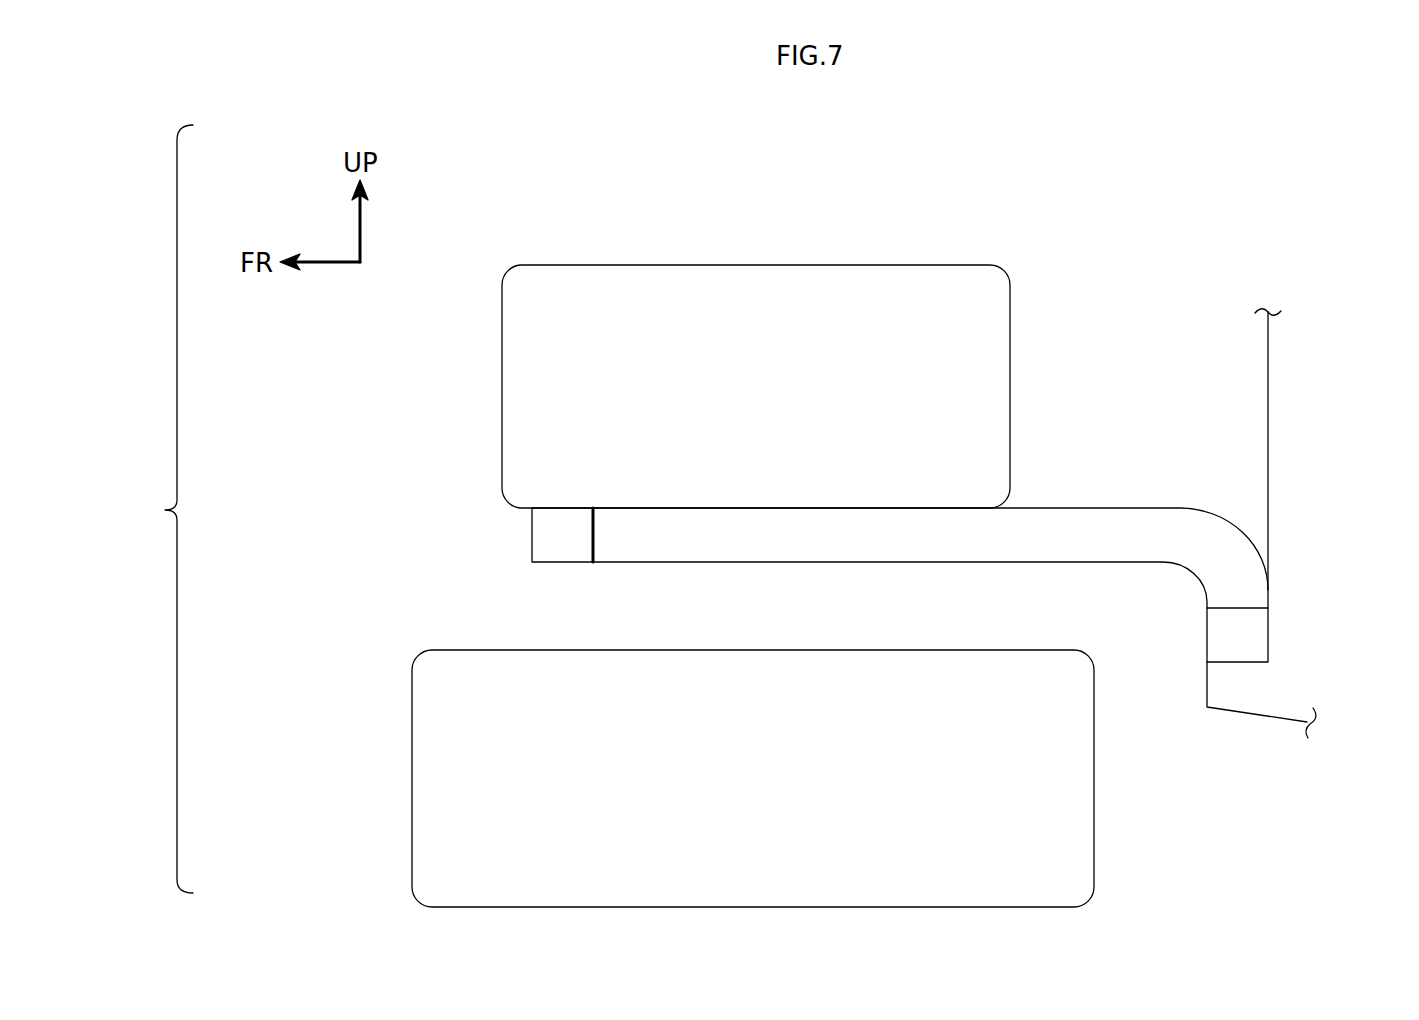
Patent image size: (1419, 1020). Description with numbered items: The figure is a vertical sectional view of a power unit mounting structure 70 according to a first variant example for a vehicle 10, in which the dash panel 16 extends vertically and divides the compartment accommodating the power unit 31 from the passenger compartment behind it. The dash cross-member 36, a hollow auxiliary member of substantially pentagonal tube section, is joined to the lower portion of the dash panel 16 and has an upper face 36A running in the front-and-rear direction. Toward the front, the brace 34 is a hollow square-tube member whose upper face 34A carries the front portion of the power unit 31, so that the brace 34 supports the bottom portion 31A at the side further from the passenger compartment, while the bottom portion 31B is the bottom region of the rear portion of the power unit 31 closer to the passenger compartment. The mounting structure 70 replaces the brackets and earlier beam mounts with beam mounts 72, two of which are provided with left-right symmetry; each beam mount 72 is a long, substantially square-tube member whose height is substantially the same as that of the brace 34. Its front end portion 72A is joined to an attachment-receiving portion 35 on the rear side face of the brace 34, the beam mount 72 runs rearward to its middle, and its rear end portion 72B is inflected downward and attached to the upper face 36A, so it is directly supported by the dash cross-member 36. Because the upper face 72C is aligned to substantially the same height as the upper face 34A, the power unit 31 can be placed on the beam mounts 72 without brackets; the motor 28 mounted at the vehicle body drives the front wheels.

The vehicle 10 is at (1193, 230).
The dash panel 16 is at (1265, 398).
The motor 28 is at (797, 650).
The power unit 31 is at (866, 264).
The bottom portion 31A is at (552, 514).
The bottom portion 31B is at (930, 512).
The brace 34 is at (531, 538).
The upper face 34A is at (577, 512).
The attachment-receiving portions 35 is at (596, 525).
The dash cross-member 36 is at (1270, 632).
The upper face 36A is at (1237, 606).
The power unit mounting structure 70 is at (445, 478).
The beam mount 72 is at (1063, 507).
The front end portion 72A is at (610, 548).
The rear end portion 72B is at (1215, 585).
The upper face 72C is at (793, 507).